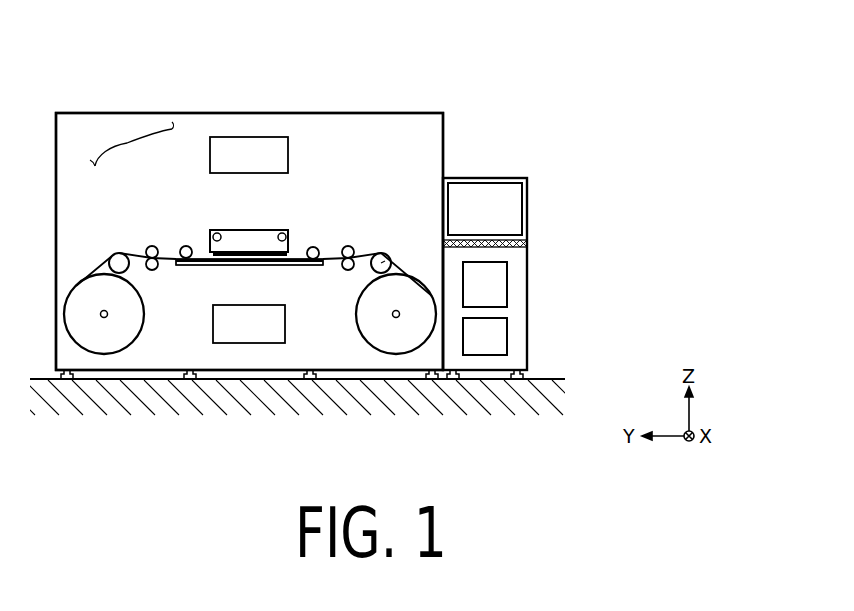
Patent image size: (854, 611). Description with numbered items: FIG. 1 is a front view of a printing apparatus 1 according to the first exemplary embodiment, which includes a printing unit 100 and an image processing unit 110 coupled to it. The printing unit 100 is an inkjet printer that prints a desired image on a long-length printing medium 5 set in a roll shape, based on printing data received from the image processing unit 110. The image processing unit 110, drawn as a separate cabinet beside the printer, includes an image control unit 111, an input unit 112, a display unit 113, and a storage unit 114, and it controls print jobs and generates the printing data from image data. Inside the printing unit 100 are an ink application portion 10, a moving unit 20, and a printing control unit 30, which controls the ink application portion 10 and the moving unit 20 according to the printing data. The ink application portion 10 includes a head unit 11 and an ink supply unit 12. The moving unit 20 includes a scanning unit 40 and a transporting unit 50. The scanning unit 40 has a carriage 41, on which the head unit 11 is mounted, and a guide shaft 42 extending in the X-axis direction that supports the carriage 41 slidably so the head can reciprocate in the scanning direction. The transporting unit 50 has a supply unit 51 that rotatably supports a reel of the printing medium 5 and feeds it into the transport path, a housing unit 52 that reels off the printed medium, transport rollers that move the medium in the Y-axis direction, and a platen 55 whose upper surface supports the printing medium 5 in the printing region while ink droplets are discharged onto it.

The printing apparatus 1 is at (497, 37).
The printing unit 100 is at (80, 83).
The moving unit 20 is at (132, 141).
The transporting unit 50 is at (134, 193).
The scanning unit 40 is at (179, 174).
The guide shaft 42 is at (214, 234).
The carriage 41 is at (245, 237).
The head unit 11 is at (255, 252).
The ink application portion 10 is at (310, 232).
The printing control unit 30 is at (282, 146).
The printing medium 5 is at (365, 257).
The platen 55 is at (259, 266).
The ink supply unit 12 is at (217, 316).
The housing unit 52 is at (153, 341).
The supply unit 51 is at (351, 332).
The image processing unit 110 is at (501, 158).
The display unit 113 is at (513, 204).
The input unit 112 is at (530, 245).
The image control unit 111 is at (500, 290).
The storage unit 114 is at (500, 337).